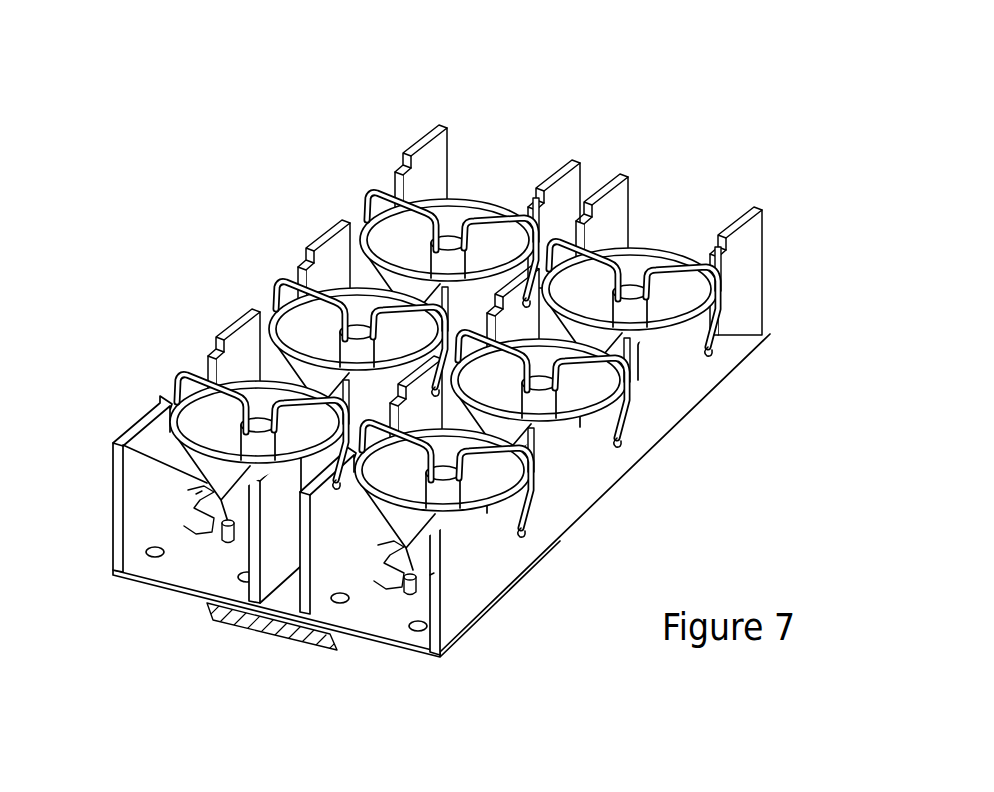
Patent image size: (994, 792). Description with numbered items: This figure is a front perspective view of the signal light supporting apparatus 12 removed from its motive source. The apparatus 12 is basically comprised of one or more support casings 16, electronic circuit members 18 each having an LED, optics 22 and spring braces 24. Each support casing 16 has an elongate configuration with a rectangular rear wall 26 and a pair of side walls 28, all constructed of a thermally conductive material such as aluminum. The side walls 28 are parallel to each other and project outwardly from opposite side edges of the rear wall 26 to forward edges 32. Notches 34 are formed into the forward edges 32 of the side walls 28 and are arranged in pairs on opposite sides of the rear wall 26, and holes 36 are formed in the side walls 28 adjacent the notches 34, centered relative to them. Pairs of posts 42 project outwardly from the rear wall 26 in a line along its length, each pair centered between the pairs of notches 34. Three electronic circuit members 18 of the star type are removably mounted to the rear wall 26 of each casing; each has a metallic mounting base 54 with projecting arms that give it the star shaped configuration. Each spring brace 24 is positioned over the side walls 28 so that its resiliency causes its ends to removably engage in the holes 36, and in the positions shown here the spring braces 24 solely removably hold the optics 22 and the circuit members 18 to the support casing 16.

The signal light supporting apparatus 12 is at (448, 385).
The support casing 16 is at (113, 510).
The electronic circuit member 18 is at (198, 492).
The optic 22 is at (478, 202).
The spring brace 24 is at (370, 200).
The rear wall 26 is at (240, 625).
The side wall 28 is at (113, 493).
The forward edge 32 is at (442, 130).
The notch 34 is at (380, 178).
The hole 36 is at (725, 340).
The post 42 is at (228, 542).
The metallic mounting base 54 is at (213, 513).